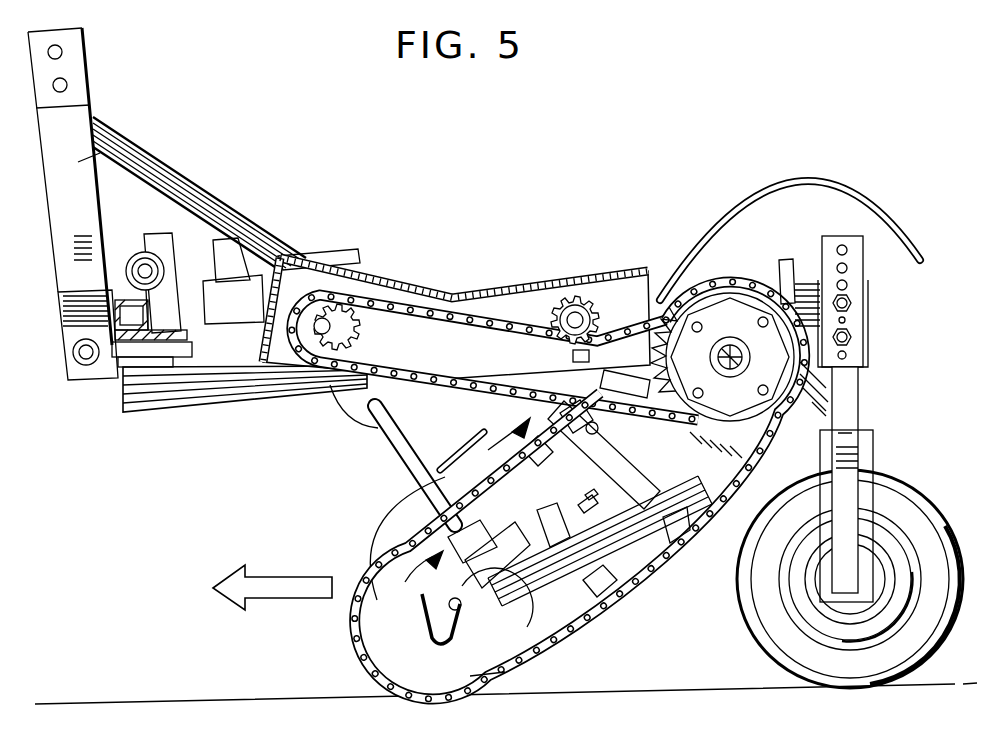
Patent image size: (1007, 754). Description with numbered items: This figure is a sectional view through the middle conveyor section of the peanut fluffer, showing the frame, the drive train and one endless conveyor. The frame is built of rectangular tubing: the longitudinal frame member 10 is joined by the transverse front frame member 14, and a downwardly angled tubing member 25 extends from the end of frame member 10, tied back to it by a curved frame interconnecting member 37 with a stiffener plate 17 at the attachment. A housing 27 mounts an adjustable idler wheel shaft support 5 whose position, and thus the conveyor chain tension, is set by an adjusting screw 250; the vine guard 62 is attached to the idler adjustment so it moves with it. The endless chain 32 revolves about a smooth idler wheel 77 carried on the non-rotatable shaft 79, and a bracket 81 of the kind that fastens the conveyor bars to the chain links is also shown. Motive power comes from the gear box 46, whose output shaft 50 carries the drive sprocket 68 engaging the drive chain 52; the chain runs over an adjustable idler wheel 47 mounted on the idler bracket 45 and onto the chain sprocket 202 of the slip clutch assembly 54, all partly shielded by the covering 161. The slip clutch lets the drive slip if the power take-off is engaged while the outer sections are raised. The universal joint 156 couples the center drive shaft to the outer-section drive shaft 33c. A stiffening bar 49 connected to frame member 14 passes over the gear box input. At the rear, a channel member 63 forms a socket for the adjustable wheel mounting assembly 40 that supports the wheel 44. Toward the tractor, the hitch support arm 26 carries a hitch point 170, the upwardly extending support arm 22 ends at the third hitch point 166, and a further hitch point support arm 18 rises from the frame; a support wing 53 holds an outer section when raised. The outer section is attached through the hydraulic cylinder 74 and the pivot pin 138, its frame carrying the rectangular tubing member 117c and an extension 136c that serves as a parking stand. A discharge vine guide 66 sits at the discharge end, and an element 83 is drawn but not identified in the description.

The third hitch point 166 is at (80, 48).
The upwardly extending support arm 22 is at (100, 153).
The upwardly extending hitch point support arm 18 is at (143, 158).
The stiffening bar 49 is at (158, 245).
The spacer block 83 is at (235, 240).
The tractor hitch support arm 26 is at (258, 262).
The gear box 46 is at (340, 252).
The drive sprocket 68 is at (334, 305).
The drive chain 52 is at (430, 305).
The covering or housing 161 is at (480, 290).
The idler bracket 45 is at (533, 282).
The adjustable idler wheel 47 is at (617, 275).
The slip clutch assembly 54 is at (698, 296).
The chain sprocket 202 is at (718, 296).
The discharge vine guide 66 is at (747, 197).
The support wing 53 is at (785, 260).
The channel member 63 is at (868, 302).
The universal joint 156 is at (752, 355).
The adjustable wheel mounting assembly 40 is at (872, 448).
The outer section drive shaft 33c is at (767, 427).
The wheel 44 is at (845, 662).
The rectangular tubing member 117c is at (125, 283).
The hydraulic cylinder 74 is at (140, 255).
The hitch point 170 is at (88, 360).
The frame extension 136c is at (140, 373).
The pivot pin 138 is at (160, 380).
The transverse rectangular tubing member 14 is at (193, 395).
The rectangular tubing member 10 is at (250, 385).
The output shaft 50 is at (322, 336).
The curved frame interconnecting member 37 is at (400, 453).
The vine guard 62 is at (380, 525).
The housing 27 is at (540, 520).
The adjustable idler wheel shaft support 5 is at (422, 594).
The stiffener plate 17 is at (557, 590).
The downwardly extending rectangular tubing member 25 is at (677, 547).
The adjusting screw 250 is at (603, 586).
The bracket 81 is at (627, 590).
The endless chain 32 is at (597, 628).
The non-rotatable shaft 79 is at (493, 660).
The idler wheel 77 is at (465, 660).